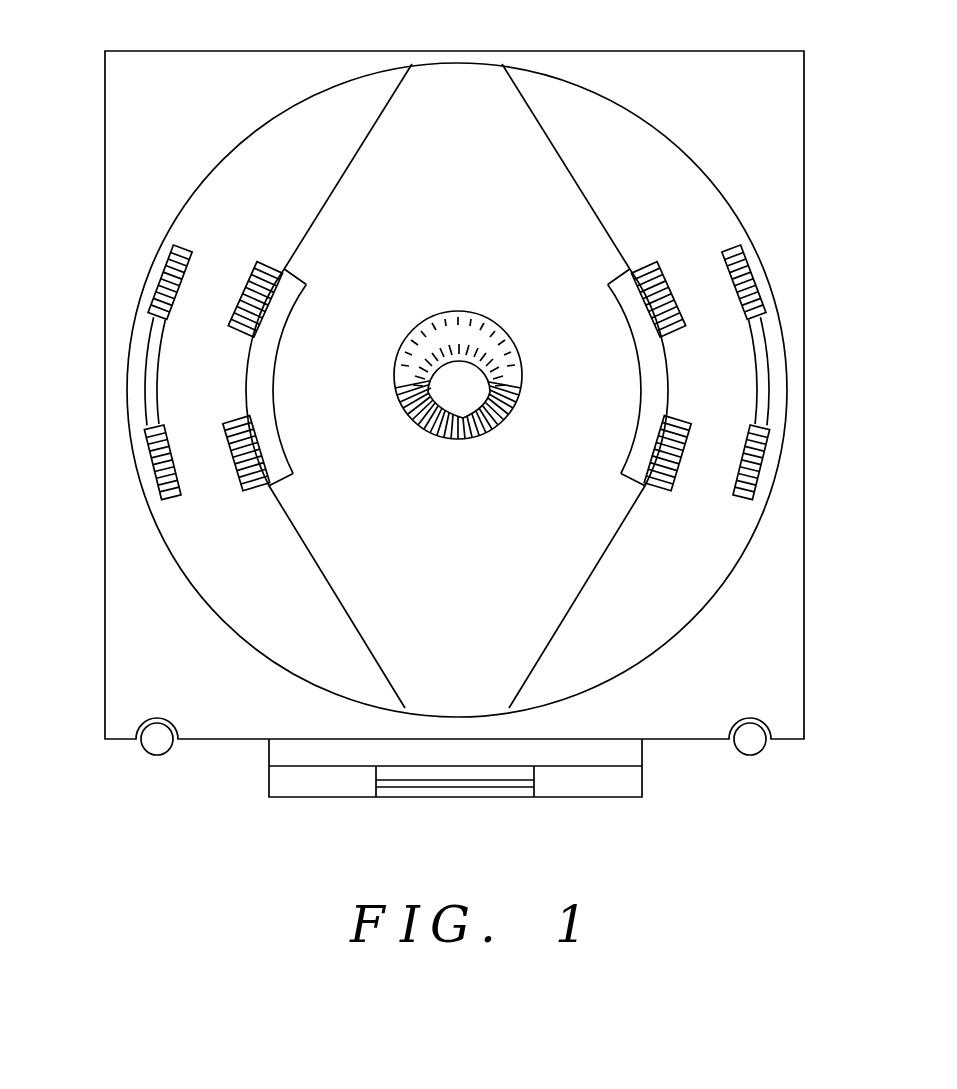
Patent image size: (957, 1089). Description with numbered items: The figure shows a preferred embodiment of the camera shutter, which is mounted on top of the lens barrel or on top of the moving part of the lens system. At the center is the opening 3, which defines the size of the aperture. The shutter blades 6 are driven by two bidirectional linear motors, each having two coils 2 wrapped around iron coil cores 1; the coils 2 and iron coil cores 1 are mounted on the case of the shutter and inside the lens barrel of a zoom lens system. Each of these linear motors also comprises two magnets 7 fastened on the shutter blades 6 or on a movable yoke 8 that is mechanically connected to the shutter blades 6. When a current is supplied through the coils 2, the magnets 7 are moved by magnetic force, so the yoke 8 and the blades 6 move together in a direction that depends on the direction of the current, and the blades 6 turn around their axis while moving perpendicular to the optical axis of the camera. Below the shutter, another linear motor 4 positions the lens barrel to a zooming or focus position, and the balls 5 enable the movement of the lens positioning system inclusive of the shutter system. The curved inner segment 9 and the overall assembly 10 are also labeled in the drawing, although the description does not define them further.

The iron coil core 1 is at (857, 392).
The coil 2 is at (857, 272).
The opening 3 is at (458, 284).
The linear motor 4 is at (360, 755).
The ball 5 is at (753, 788).
The shutter blade 6 is at (517, 376).
The magnet 7 is at (667, 518).
The yoke 8 is at (483, 108).
The inner yoke 9 is at (647, 400).
The motor 10 is at (822, 93).